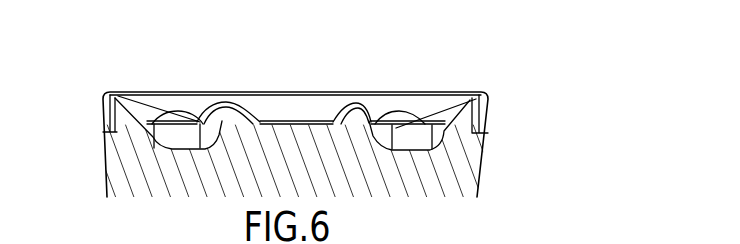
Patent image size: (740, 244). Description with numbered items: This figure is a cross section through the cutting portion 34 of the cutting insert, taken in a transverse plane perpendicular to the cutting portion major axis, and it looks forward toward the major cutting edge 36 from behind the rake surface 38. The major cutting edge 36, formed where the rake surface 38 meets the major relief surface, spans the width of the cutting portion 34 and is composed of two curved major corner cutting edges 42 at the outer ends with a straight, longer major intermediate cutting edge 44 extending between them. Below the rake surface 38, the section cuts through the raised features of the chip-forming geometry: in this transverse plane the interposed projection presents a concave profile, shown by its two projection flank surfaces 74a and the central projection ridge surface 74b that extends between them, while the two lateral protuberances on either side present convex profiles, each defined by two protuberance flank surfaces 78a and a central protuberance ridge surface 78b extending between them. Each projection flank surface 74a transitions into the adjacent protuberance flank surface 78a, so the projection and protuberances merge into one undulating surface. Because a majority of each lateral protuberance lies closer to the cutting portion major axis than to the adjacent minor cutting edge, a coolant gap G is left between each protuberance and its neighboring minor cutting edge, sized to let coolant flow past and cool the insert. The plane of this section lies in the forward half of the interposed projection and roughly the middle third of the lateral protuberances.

The cutting portion 34 is at (560, 38).
The major cutting edge 36 is at (435, 92).
The rake surface 38 is at (130, 66).
The major corner cutting edge 42 is at (103, 93).
The major intermediate cutting edge 44 is at (323, 95).
The projection flank surface 74a is at (259, 121).
The central projection ridge surface 74b is at (287, 112).
The protuberance flank surface 78a is at (190, 123).
The central protuberance ridge surface 78b is at (228, 104).
The coolant gap G is at (167, 133).